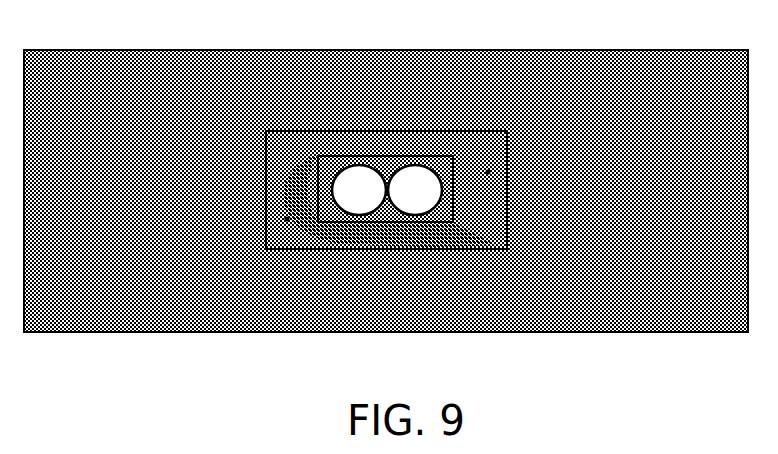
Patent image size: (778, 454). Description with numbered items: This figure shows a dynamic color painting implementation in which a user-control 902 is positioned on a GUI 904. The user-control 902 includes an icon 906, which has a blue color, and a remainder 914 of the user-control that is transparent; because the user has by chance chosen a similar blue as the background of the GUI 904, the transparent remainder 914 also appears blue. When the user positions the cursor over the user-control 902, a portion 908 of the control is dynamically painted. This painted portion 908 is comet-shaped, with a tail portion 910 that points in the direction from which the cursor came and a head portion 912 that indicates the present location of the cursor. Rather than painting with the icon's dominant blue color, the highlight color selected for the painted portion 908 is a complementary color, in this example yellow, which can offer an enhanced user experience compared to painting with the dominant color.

The GUI 904 is at (511, 50).
The user-control 902 is at (488, 130).
The icon 906 is at (387, 155).
The portion 908 is at (287, 220).
The tail portion 910 is at (497, 242).
The head portion 912 is at (290, 158).
The remainder 914 is at (488, 172).